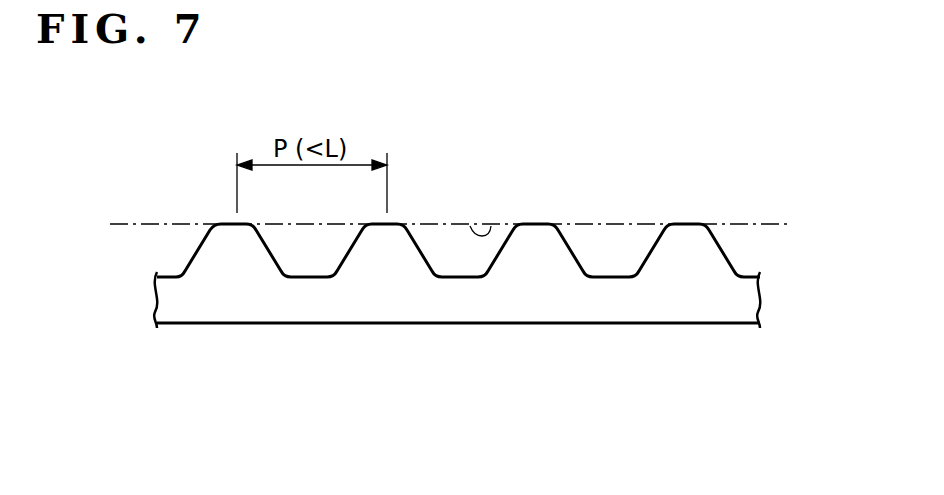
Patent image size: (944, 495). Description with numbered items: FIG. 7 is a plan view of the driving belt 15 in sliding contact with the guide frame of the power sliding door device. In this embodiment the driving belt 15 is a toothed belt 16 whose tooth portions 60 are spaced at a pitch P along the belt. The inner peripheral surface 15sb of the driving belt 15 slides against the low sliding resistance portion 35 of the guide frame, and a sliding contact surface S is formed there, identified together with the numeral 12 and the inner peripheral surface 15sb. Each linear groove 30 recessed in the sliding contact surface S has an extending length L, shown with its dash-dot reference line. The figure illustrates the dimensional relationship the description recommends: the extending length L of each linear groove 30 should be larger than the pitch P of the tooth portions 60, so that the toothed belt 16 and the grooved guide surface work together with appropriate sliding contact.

The tooth portion 60 is at (211, 247).
The linear groove 30 is at (490, 234).
The driving belt 15 is at (457, 343).
The toothed belt 16 is at (412, 324).
The surface 12 is at (485, 183).
The low sliding resistance portion 35 is at (485, 183).
The inner peripheral surface 15sb is at (645, 218).